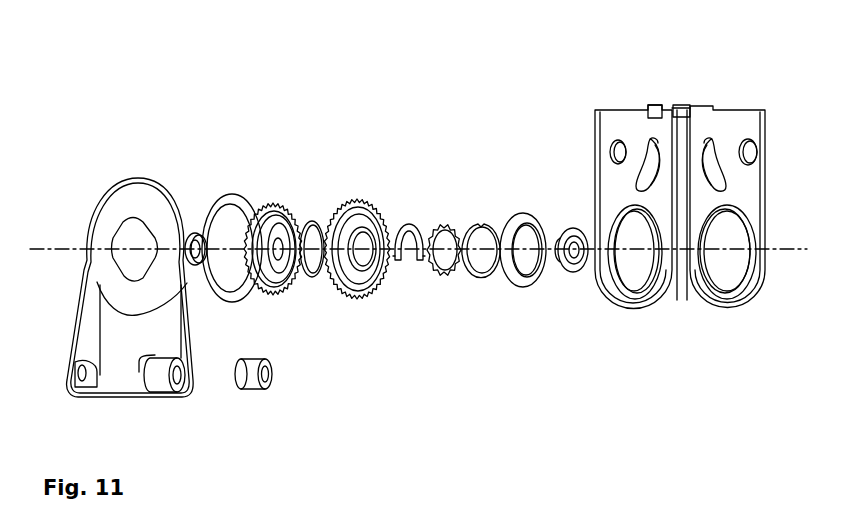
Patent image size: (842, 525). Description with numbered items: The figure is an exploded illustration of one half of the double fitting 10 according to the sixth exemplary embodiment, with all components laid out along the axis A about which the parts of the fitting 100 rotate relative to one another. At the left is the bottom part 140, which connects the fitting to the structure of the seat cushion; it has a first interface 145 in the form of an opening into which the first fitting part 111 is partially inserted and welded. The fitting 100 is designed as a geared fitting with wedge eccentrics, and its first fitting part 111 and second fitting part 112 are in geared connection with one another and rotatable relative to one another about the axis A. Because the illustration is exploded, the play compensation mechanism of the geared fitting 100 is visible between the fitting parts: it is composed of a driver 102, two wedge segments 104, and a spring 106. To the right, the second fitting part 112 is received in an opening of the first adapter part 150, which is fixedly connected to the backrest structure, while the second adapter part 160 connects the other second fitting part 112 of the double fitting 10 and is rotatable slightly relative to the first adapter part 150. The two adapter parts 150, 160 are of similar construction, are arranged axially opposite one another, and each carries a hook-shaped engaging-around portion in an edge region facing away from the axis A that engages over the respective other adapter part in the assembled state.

The double fitting 10 is at (232, 166).
The fitting 100 is at (377, 143).
The driver 102 is at (555, 268).
The wedge segment 104 is at (400, 260).
The spring 106 is at (475, 222).
The first fitting part 111 is at (287, 288).
The second fitting part 112 is at (363, 285).
The bottom part 140 is at (110, 382).
The first interface 145 is at (132, 238).
The first adapter part 150 is at (600, 152).
The second adapter part 160 is at (703, 288).
The axis A is at (802, 252).